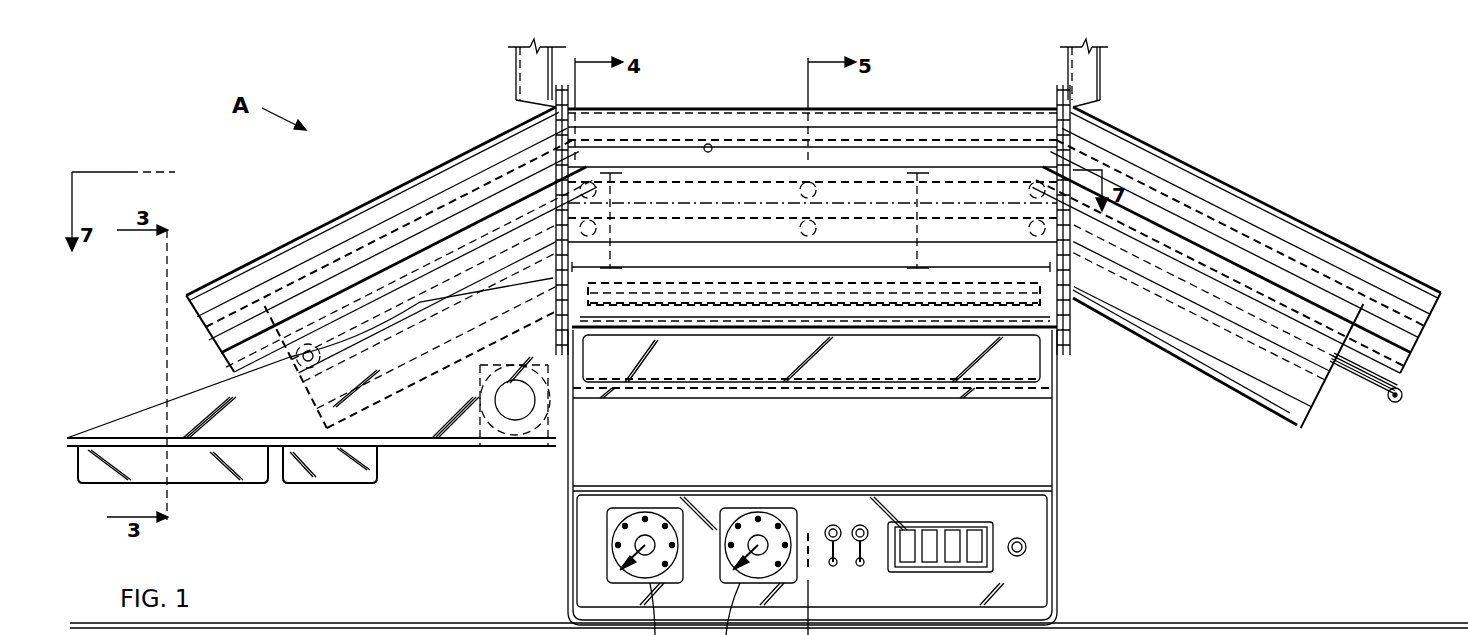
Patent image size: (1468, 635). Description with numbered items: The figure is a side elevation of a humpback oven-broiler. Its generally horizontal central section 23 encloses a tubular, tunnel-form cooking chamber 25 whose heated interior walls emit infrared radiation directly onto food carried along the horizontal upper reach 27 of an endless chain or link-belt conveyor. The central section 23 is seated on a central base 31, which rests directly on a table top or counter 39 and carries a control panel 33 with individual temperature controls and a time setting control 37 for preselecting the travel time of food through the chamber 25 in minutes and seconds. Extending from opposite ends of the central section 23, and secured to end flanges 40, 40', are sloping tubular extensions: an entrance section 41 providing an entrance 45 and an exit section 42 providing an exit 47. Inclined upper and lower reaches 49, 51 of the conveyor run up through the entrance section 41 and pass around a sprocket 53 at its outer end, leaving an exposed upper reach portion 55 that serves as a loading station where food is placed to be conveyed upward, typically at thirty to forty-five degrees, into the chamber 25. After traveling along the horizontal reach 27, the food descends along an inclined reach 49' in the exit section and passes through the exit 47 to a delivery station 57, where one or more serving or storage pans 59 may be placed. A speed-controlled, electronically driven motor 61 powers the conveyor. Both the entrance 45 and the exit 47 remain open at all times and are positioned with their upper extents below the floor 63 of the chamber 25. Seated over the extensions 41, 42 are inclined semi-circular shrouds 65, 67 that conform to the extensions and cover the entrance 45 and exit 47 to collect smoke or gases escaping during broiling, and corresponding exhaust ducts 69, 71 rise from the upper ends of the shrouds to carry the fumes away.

The central section 23 is at (674, 108).
The cooking chamber 25 is at (712, 145).
The upper reach 27 is at (840, 182).
The central base 31 is at (1063, 462).
The control panel 33 is at (1048, 530).
The time setting control 37 is at (1048, 568).
The table top or counter 39 is at (1220, 625).
The end flange 40 is at (1128, 220).
The end flange 40' is at (479, 220).
The entrance section 41 is at (1252, 404).
The entrance 45 is at (1312, 407).
The exit section 42 is at (373, 400).
The exit 47 is at (285, 365).
The inclined upper reach 49 is at (1240, 233).
The inclined reach 49' is at (400, 253).
The inclined lower reach 51 is at (1340, 246).
The sprocket 53 is at (1396, 403).
The exposed upper reach portion 55 is at (1385, 368).
The delivery station 57 is at (114, 410).
The serving or storage pans 59 is at (187, 483).
The motor 61 is at (486, 448).
The floor of chamber 63 is at (1060, 378).
The shroud 65 is at (1275, 208).
The shroud 67 is at (356, 205).
The exhaust duct 69 is at (1103, 75).
The exhaust duct 71 is at (520, 72).